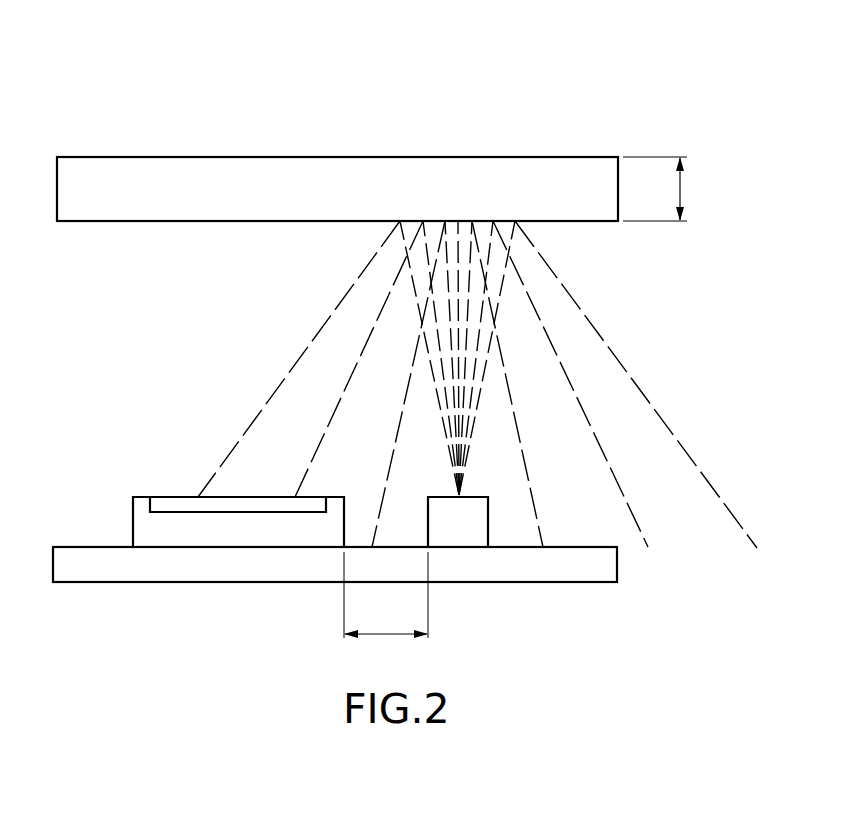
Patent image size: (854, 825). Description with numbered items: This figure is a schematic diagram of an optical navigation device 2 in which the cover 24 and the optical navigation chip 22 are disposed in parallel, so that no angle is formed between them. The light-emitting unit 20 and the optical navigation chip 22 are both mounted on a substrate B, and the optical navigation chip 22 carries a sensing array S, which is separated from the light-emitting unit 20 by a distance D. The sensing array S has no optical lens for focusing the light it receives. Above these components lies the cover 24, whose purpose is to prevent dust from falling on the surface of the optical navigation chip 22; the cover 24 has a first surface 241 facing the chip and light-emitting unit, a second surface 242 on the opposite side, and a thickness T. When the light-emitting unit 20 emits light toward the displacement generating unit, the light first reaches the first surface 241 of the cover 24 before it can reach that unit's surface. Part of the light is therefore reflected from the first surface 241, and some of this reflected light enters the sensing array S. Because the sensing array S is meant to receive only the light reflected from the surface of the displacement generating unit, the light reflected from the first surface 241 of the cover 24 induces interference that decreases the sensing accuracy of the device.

The optical navigation device 2 is at (57, 51).
The cover 24 is at (356, 176).
The second surface 242 is at (573, 156).
The first surface 241 is at (580, 222).
The thickness T is at (655, 189).
The optical navigation chip 22 is at (142, 524).
The sensing array S is at (177, 503).
The substrate B is at (220, 565).
The distance D is at (386, 595).
The light-emitting unit 20 is at (465, 535).